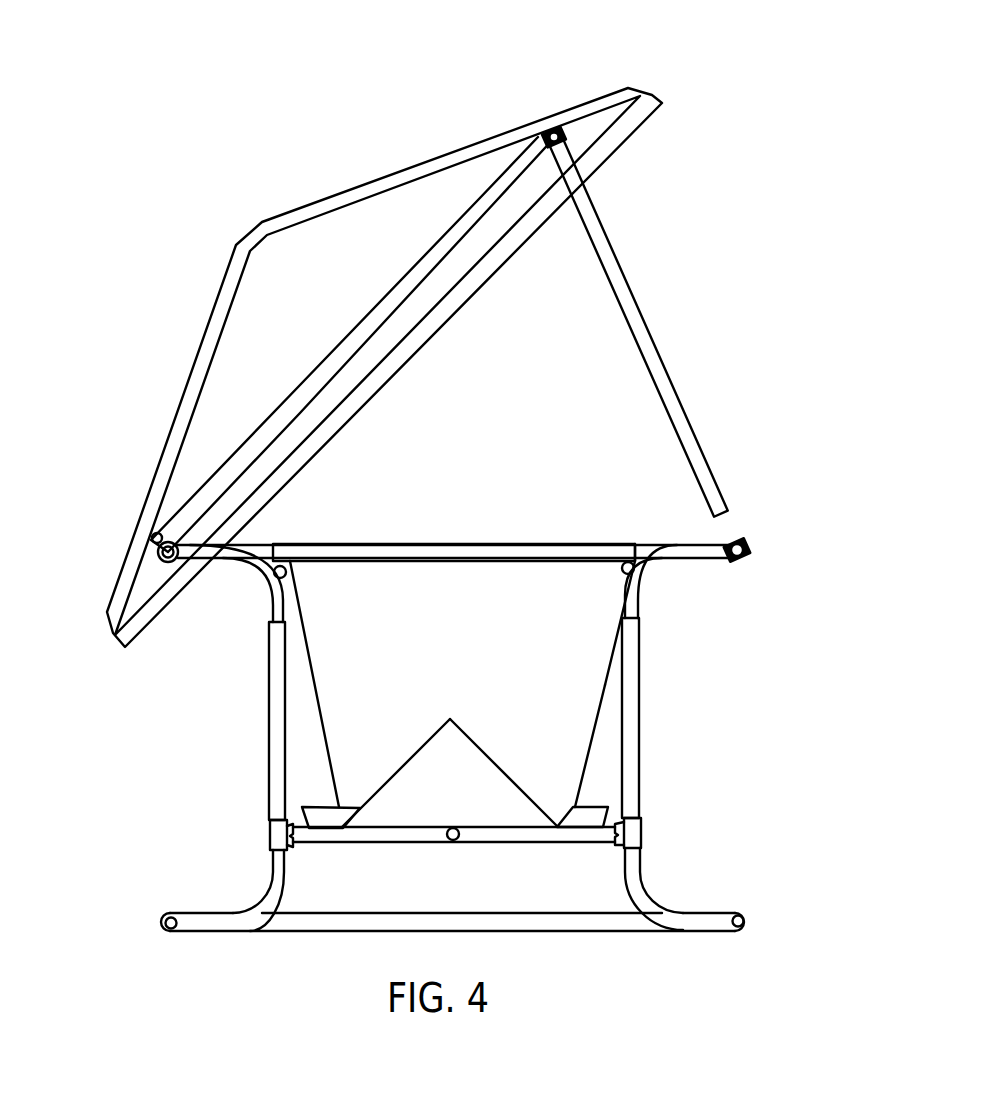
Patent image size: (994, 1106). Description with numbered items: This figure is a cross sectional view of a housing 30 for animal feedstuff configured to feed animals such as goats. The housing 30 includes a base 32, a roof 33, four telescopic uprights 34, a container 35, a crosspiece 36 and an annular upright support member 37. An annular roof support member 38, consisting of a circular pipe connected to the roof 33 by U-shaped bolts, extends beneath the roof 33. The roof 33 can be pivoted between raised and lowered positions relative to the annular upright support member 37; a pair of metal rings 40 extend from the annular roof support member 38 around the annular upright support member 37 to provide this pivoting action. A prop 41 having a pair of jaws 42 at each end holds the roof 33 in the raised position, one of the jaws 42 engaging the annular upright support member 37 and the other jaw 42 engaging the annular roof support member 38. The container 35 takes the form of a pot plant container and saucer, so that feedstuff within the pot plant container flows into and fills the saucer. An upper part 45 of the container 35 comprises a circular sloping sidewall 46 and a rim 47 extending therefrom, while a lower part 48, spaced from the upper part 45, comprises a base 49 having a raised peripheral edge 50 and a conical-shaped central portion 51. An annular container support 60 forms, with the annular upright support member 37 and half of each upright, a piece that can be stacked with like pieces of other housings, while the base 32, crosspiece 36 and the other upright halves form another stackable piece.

The housing 30 is at (203, 953).
The base 32 is at (622, 913).
The roof 33 is at (353, 180).
The telescopic uprights 34 is at (270, 728).
The container 35 is at (588, 766).
The crosspiece 36 is at (325, 841).
The annular upright support member 37 is at (280, 542).
The annular roof support member 38 is at (203, 487).
The metal rings 40 is at (163, 563).
The prop 41 is at (653, 342).
The jaws 42 is at (540, 140).
The upper part 45 is at (470, 646).
The circular sloping sidewall 46 is at (603, 648).
The rim 47 is at (628, 545).
The lower part 48 is at (314, 803).
The base 49 is at (538, 820).
The raised peripheral edge 50 is at (597, 800).
The conical-shaped central portion 51 is at (427, 742).
The annular container support 60 is at (278, 574).